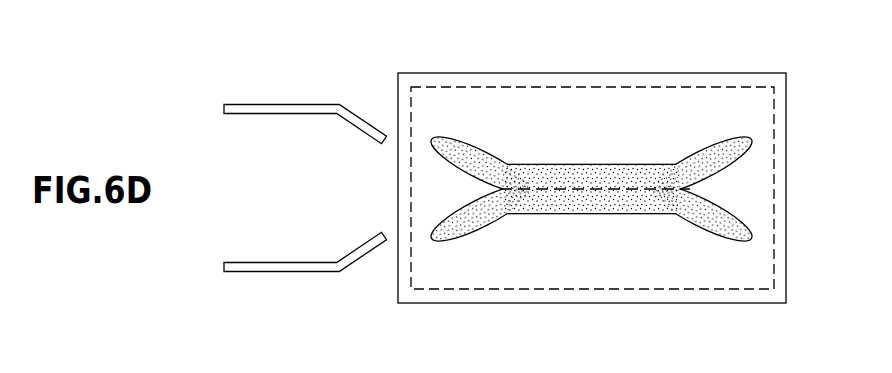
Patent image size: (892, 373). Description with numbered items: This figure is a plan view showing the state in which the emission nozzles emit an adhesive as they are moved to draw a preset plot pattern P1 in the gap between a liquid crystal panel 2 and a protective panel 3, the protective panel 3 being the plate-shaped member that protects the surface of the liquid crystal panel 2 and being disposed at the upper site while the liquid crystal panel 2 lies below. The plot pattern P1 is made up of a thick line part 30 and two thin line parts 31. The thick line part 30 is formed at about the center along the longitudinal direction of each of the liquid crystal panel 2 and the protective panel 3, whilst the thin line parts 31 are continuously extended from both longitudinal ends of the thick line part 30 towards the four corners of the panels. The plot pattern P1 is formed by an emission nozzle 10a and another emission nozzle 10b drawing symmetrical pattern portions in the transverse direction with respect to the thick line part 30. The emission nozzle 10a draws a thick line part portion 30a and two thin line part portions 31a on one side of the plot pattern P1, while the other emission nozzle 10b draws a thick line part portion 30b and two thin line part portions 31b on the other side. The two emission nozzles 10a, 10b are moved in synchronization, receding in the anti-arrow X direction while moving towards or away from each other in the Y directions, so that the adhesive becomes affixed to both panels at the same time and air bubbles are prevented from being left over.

The liquid crystal panel 2 is at (775, 120).
The protective panel 3 is at (787, 192).
The emission nozzle 10a is at (301, 110).
The other emission nozzle 10b is at (301, 266).
The thick line part 30 is at (591, 189).
The thick line part portion 30a is at (641, 176).
The thick line part portion 30b is at (640, 200).
The thin line parts 31 is at (591, 189).
The thin line part portions 31a is at (463, 143).
The thin line part portions 31b is at (462, 235).
The plot pattern P1 is at (567, 145).